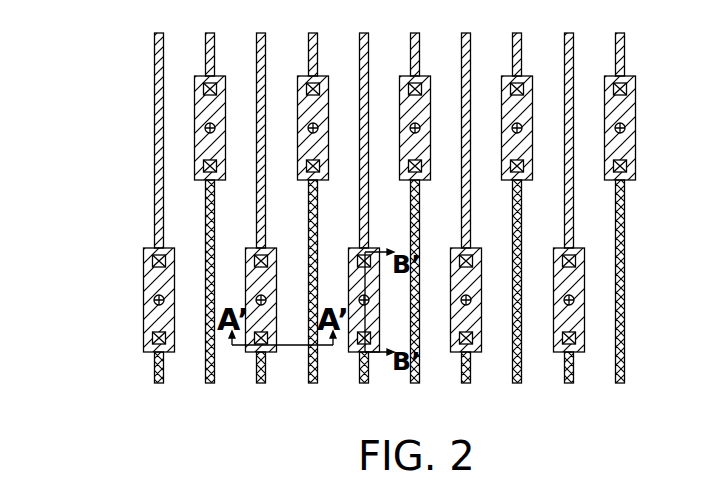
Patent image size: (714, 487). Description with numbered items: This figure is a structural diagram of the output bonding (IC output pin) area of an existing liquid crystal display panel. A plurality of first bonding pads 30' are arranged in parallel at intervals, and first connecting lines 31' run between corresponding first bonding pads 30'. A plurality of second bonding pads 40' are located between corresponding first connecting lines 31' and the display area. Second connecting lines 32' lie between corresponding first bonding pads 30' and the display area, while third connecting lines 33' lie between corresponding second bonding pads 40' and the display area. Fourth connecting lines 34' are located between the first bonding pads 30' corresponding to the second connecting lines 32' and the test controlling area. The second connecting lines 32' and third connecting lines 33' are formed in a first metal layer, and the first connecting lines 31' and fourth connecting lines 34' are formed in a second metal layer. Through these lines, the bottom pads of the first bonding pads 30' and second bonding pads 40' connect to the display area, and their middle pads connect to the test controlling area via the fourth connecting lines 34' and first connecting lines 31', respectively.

The first bonding pad 30' is at (113, 300).
The first connecting line 31' is at (133, 281).
The second connecting line 32' is at (108, 140).
The third connecting line 33' is at (160, 51).
The fourth connecting line 34' is at (120, 365).
The second bonding pad 40' is at (139, 128).